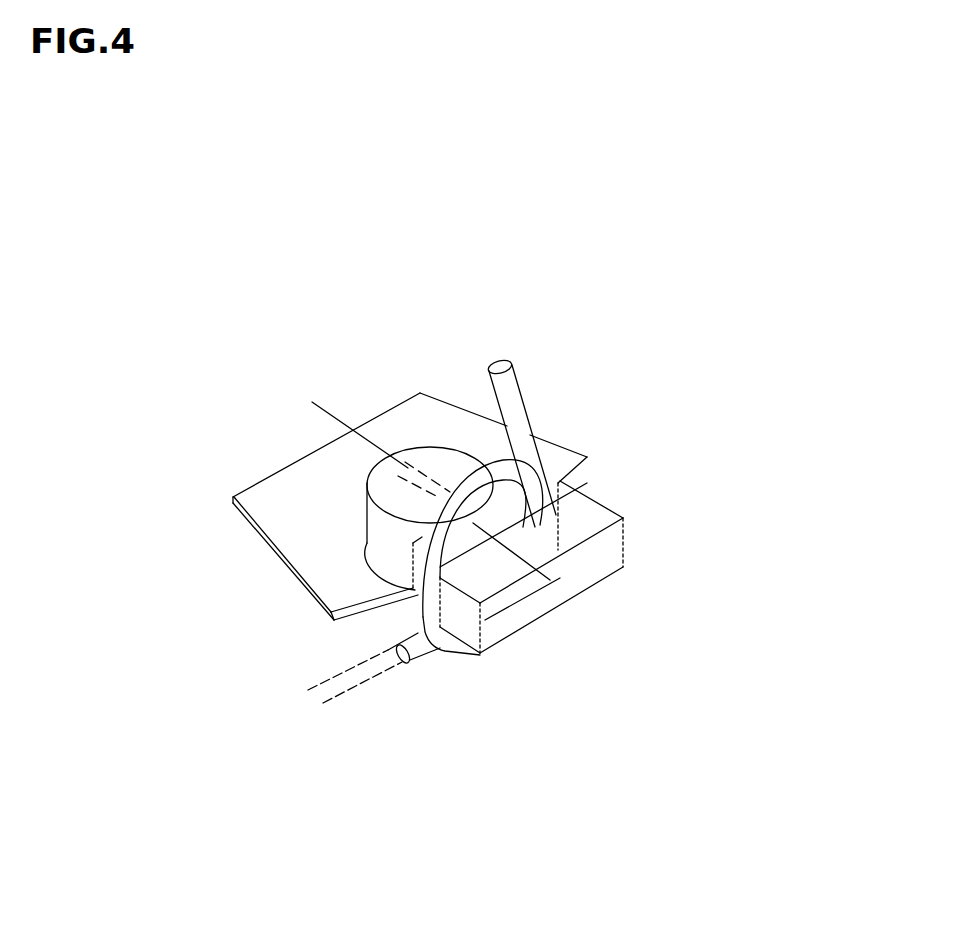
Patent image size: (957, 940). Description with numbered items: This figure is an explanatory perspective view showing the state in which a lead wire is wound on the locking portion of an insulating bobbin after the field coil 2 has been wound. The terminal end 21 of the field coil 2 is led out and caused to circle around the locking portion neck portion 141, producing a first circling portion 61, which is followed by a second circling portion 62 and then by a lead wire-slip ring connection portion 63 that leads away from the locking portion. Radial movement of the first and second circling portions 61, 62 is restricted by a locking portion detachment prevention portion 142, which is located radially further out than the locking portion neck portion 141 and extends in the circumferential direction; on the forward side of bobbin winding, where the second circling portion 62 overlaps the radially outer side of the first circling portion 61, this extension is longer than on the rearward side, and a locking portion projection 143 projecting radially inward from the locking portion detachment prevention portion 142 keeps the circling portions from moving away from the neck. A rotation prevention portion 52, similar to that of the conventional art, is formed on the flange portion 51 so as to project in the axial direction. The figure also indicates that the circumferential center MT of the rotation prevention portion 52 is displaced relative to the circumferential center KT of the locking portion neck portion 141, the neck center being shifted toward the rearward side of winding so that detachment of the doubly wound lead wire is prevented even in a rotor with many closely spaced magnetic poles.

The field coil 2 is at (338, 705).
The terminal end 21 is at (425, 650).
The flange portion 51 is at (275, 511).
The rotation prevention portion 52 is at (432, 497).
The first circling portion 61 is at (368, 505).
The second circling portion 62 is at (597, 548).
The lead wire-slip ring connection portion 63 is at (515, 393).
The locking portion neck portion 141 is at (488, 572).
The locking portion detachment prevention portion 142 is at (548, 598).
The locking portion projection 143 is at (558, 447).
The center of the rotation prevention portion MT is at (326, 404).
The center of the locking portion neck portion KT is at (600, 610).